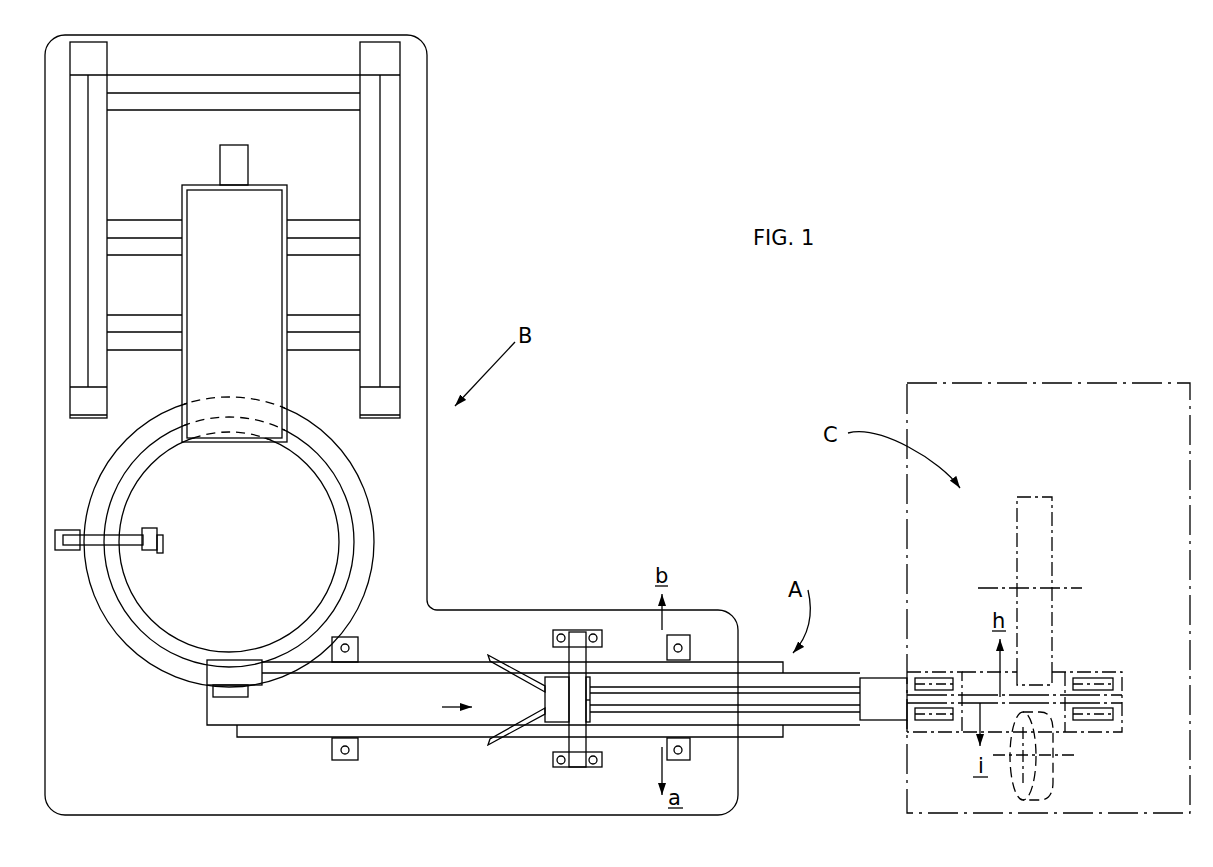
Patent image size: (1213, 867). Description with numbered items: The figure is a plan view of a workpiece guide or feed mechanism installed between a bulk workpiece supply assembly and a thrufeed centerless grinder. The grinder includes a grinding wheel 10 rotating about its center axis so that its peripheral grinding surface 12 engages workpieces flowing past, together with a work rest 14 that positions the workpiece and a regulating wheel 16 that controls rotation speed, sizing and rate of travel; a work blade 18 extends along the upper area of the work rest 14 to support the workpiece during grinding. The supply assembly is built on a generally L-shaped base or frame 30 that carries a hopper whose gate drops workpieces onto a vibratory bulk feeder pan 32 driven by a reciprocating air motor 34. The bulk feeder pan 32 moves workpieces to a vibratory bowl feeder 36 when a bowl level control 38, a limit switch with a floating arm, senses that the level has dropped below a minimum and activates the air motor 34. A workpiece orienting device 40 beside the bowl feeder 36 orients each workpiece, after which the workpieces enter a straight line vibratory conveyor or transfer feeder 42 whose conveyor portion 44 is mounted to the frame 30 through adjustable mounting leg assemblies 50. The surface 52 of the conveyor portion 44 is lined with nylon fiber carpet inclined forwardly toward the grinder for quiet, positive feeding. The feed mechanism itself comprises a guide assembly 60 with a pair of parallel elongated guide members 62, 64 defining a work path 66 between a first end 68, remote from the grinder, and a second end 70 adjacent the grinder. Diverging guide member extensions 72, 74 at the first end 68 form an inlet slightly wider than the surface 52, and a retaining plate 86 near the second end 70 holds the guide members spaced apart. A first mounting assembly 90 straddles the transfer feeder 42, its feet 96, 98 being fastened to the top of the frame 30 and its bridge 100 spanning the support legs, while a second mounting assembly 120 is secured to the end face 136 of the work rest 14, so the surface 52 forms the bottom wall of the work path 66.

The grinding wheel 10 is at (1059, 582).
The peripheral grinding surface 12 is at (1043, 628).
The work rest 14 is at (958, 732).
The regulating wheel 16 is at (1012, 788).
The work blade 18 is at (968, 695).
The base or frame 30 is at (408, 490).
The vibratory bulk feeder pan 32 is at (265, 290).
The reciprocating air motor 34 is at (243, 157).
The vibratory bowl feeder 36 is at (342, 463).
The bowl level control 38 is at (137, 550).
The workpiece orienting device 40 is at (207, 697).
The straight line vibratory conveyor or transfer feeder 42 is at (432, 625).
The conveyor portion 44 is at (378, 672).
The adjustable mounting leg assemblies 50 is at (358, 625).
The surface 52 is at (386, 712).
The guide assembly 60 is at (814, 678).
The elongated guide member 62 is at (810, 715).
The elongated guide member 64 is at (843, 683).
The work path or workpiece flow path 66 is at (710, 701).
The first end 68 is at (526, 699).
The second end 70 is at (912, 714).
The guide member extension 72 is at (493, 743).
The guide member extension 74 is at (497, 653).
The retaining plate 86 is at (892, 712).
The first mounting assembly 90 is at (601, 717).
The foot 96 is at (590, 767).
The foot 98 is at (595, 628).
The bridge 100 is at (577, 660).
The second mounting assembly 120 is at (893, 670).
The end face 136 is at (903, 727).